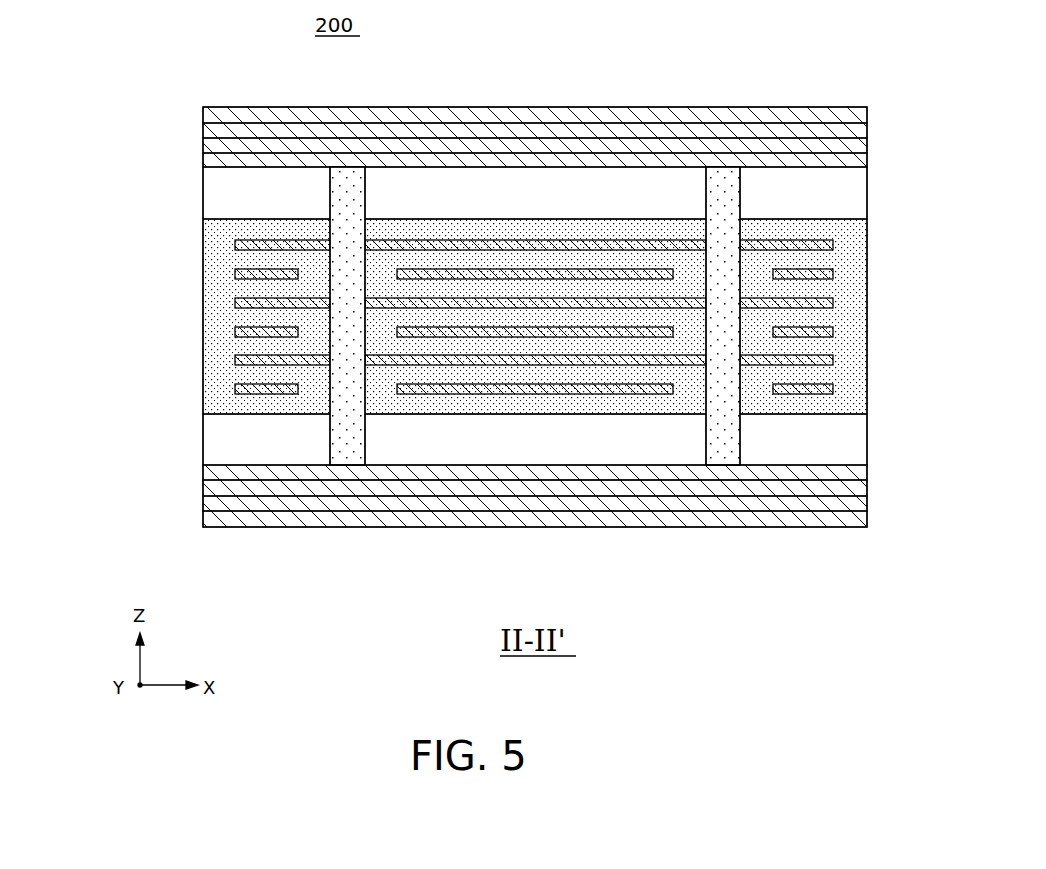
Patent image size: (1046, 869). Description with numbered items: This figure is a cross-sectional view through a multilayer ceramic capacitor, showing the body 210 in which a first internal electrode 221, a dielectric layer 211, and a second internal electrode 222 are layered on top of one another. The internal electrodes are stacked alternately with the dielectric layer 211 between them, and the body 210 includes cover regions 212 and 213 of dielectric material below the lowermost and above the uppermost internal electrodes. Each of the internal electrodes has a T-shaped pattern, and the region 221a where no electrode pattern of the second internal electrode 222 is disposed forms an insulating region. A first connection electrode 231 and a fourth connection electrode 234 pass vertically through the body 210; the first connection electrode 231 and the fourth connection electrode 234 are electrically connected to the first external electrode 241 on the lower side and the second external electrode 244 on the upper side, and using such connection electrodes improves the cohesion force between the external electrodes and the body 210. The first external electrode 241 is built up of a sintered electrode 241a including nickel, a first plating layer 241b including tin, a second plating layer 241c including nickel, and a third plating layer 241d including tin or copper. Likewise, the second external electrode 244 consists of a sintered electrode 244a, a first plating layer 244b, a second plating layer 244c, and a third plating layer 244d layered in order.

The body 210 is at (512, 464).
The dielectric layer 211 is at (828, 344).
The lower cover portion 212 is at (862, 433).
The upper cover portion 213 is at (864, 190).
The first internal electrode 221 is at (237, 361).
The region in which an electrode is not disposed 221a is at (313, 390).
The second internal electrode 222 is at (828, 392).
The first connection electrode 231 is at (344, 180).
The fourth connection electrode 234 is at (722, 182).
The first external electrode 241 is at (108, 448).
The sintered electrode 241a is at (203, 472).
The first plating layer 241b is at (203, 489).
The second plating layer 241c is at (203, 504).
The third plating layer 241d is at (245, 520).
The second external electrode 244 is at (108, 68).
The sintered electrode 244a is at (203, 160).
The first plating layer 244b is at (203, 141).
The second plating layer 244c is at (203, 113).
The third plating layer 244d is at (240, 108).